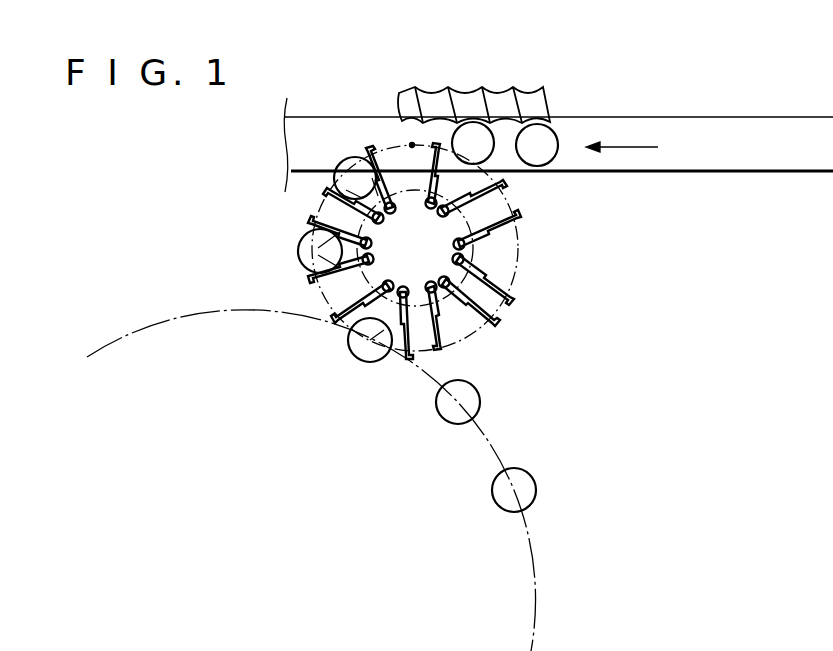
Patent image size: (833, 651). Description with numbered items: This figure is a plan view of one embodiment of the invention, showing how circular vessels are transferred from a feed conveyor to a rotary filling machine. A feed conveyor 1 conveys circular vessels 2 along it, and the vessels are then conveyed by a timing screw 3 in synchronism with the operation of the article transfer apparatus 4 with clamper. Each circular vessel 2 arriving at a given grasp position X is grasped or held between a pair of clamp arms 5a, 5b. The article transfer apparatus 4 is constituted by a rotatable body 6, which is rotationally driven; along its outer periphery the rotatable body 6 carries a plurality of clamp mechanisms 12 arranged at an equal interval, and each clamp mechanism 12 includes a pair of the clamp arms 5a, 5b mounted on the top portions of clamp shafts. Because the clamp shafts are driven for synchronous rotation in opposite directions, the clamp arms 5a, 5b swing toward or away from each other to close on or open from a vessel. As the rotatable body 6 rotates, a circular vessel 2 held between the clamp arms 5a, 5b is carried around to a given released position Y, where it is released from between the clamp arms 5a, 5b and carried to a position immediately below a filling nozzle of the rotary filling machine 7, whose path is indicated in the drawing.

The feed conveyor 1 is at (706, 118).
The circular vessel 2 is at (548, 140).
The timing screw 3 is at (465, 94).
The article transfer apparatus with clamper 4 is at (513, 257).
The clamp arm 5a is at (377, 158).
The clamp arm 5b is at (307, 219).
The rotatable body 6 is at (514, 293).
The rotary filling machine 7 is at (530, 570).
The clamp mechanism 12 is at (406, 226).
The grasp position X is at (410, 143).
The released position Y is at (370, 340).